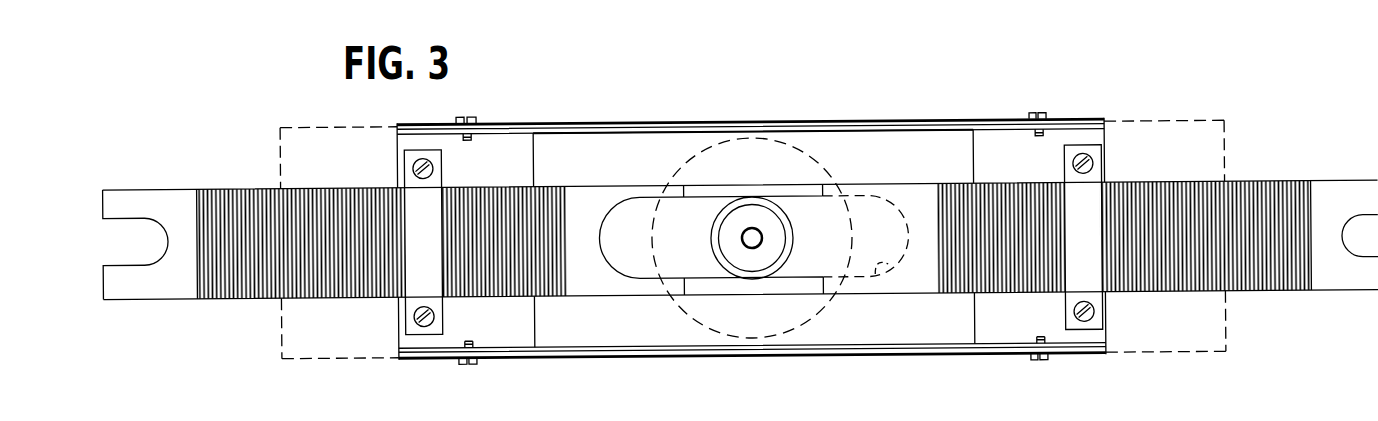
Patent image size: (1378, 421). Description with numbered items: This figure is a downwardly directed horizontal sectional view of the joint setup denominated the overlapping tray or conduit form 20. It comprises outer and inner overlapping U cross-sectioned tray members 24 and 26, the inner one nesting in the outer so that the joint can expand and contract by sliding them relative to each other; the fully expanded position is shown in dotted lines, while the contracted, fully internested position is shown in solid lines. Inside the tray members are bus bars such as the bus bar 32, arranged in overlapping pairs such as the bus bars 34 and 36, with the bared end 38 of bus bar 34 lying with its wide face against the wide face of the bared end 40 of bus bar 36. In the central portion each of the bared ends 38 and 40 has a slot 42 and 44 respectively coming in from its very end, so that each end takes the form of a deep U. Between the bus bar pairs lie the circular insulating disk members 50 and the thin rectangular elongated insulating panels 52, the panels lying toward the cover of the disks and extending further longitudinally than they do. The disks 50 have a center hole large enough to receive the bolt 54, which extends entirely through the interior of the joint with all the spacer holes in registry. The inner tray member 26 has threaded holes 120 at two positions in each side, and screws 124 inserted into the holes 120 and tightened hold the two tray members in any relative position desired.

The overlapping tray or conduit form 20 is at (1080, 118).
The outer U cross-sectioned tray member 24 is at (1000, 120).
The inner U cross-sectioned tray member 26 is at (1172, 123).
The bus bar 32 is at (493, 184).
The bus bar 34 is at (629, 185).
The bus bar 36 is at (912, 186).
The bared end of bus bar 38 is at (691, 196).
The bared end of bus bar 40 is at (858, 186).
The slot 42 is at (658, 280).
The slot 44 is at (875, 273).
The insulating disk member 50 is at (712, 340).
The elongated insulating panel 52 is at (566, 131).
The bolt 54 is at (760, 232).
The threaded hole 120 is at (469, 138).
The screw 124 is at (473, 116).